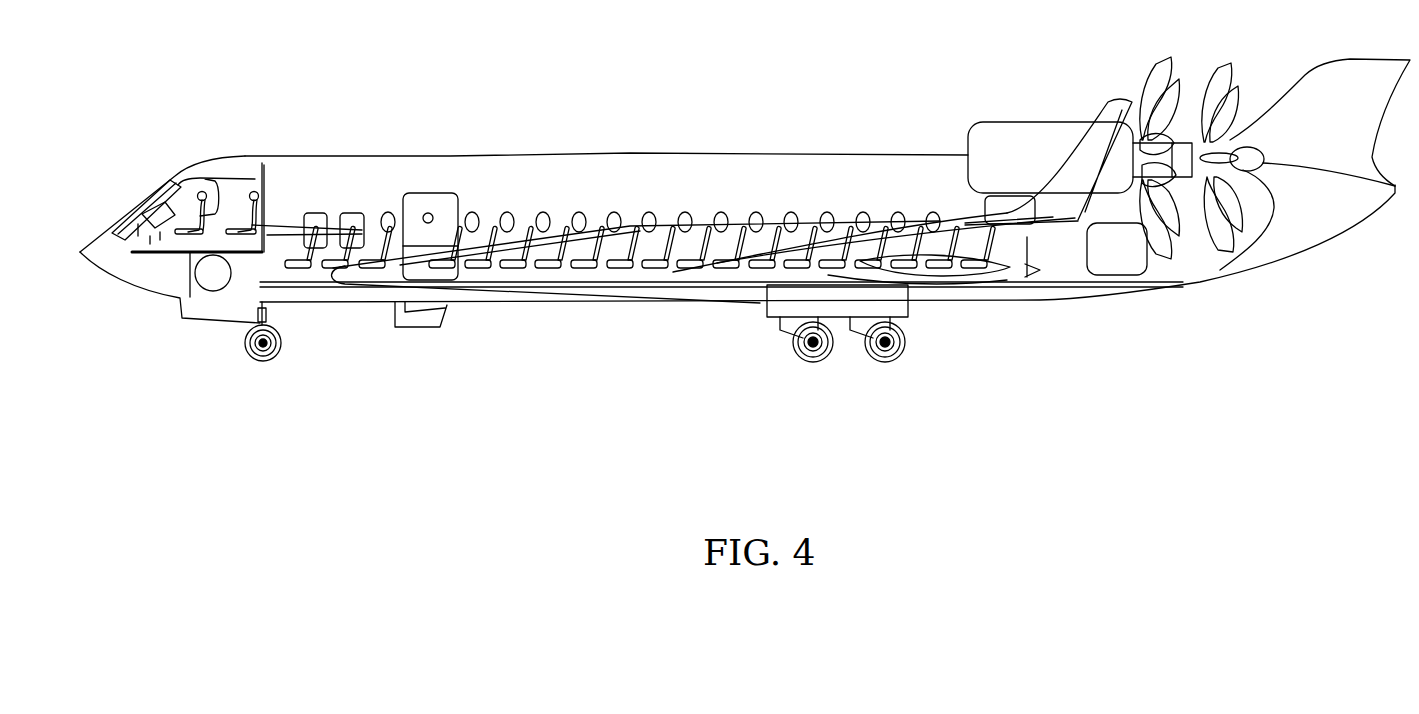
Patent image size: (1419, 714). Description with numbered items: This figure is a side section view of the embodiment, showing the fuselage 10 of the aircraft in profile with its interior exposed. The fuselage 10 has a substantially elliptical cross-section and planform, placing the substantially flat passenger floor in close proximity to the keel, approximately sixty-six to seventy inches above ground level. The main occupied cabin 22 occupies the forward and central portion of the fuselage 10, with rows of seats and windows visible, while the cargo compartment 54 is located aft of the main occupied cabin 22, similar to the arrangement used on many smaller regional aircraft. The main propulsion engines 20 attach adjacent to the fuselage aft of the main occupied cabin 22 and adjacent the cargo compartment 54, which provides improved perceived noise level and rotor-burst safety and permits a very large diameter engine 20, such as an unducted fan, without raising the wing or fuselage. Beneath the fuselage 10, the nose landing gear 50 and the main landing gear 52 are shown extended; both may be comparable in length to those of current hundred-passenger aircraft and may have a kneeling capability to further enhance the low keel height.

The fuselage 10 is at (633, 153).
The main propulsion engine 20 is at (1025, 120).
The main occupied cabin 22 is at (612, 202).
The nose landing gear 50 is at (270, 343).
The main landing gear 52 is at (868, 358).
The cargo compartment 54 is at (1097, 253).